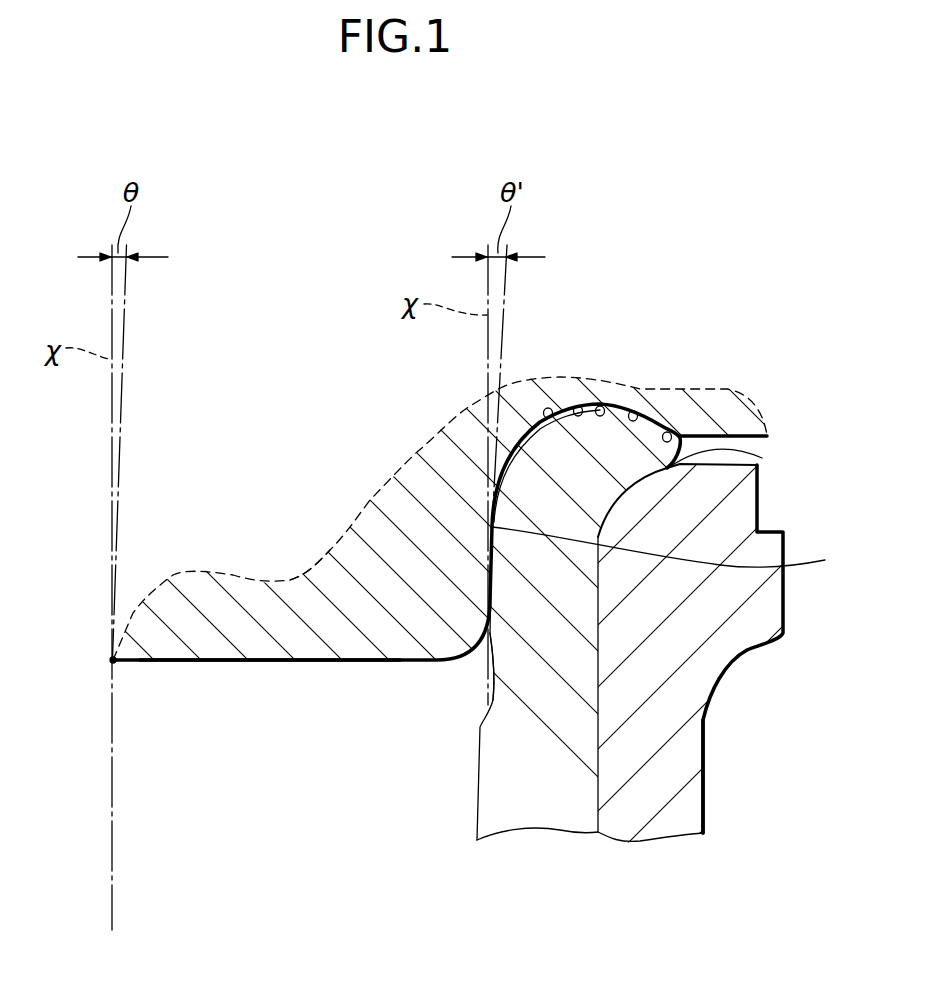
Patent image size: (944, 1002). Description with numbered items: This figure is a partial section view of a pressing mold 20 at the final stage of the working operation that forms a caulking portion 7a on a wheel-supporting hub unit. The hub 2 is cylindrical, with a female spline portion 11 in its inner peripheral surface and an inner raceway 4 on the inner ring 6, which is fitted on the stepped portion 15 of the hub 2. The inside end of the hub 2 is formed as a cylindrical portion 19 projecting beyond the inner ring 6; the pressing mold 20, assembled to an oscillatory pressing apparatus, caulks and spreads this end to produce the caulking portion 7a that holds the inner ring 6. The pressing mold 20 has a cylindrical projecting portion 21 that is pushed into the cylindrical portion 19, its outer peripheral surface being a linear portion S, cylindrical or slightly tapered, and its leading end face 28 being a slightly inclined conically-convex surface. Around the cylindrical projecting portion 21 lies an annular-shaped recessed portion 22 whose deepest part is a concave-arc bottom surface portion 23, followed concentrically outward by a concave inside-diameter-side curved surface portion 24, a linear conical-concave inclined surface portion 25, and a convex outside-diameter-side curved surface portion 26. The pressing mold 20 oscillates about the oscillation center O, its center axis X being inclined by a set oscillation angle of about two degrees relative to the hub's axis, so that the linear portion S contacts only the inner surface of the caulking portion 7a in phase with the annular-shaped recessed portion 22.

The hub 2 is at (543, 812).
The inner raceway 4 is at (733, 667).
The inner ring 6 is at (670, 787).
The caulking portion 7a is at (731, 462).
The female spline portion 11 is at (480, 792).
The stepped portion 15 is at (598, 753).
The cylindrical portion 19 is at (504, 668).
The pressing mold 20 is at (197, 588).
The cylindrical projecting portion 21 is at (299, 600).
The annular-shaped recessed portion 22 is at (548, 408).
The bottom surface portion 23 is at (576, 405).
The inside-diameter-side curved surface portion 24 is at (603, 405).
The inclined surface portion 25 is at (633, 411).
The outside-diameter-side curved surface portion 26 is at (680, 432).
The leading end face 28 is at (256, 645).
The oscillation center O is at (112, 660).
The linear portion S is at (669, 550).
The center axis X is at (122, 354).